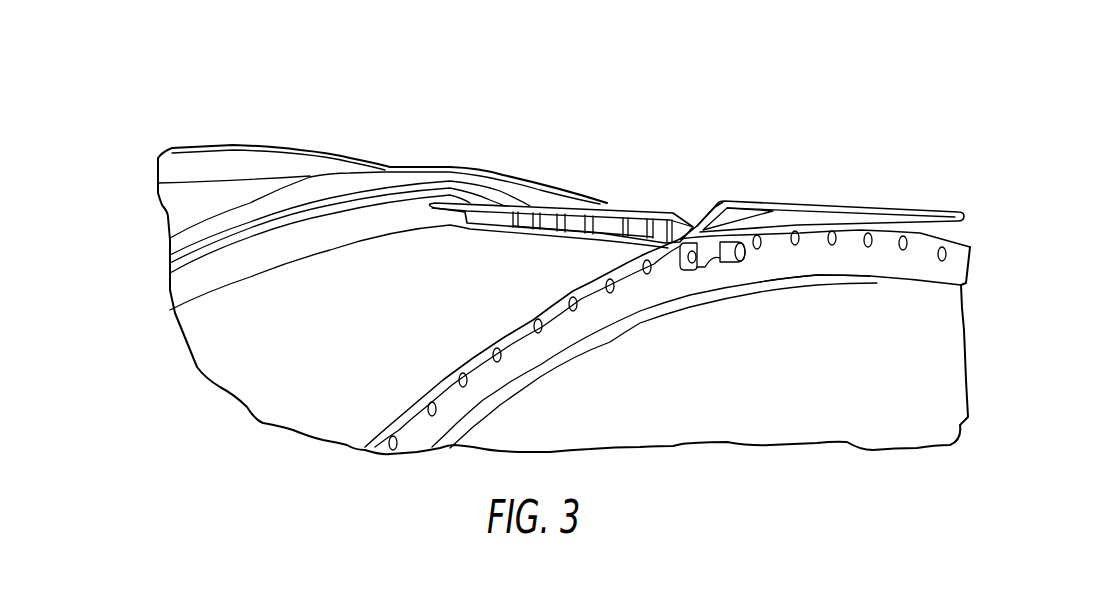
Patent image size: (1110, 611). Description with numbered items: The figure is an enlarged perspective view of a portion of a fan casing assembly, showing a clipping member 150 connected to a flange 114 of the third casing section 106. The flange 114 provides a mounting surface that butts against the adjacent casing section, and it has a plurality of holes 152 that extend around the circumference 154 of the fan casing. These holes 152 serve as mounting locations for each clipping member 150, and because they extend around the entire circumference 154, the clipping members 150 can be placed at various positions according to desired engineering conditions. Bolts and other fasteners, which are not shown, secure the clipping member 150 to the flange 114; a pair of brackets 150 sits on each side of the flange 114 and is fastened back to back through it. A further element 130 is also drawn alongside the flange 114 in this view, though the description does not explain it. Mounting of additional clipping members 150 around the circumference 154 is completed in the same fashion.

The third casing section 106 is at (768, 437).
The flange 114 is at (918, 257).
The first rail 130 is at (642, 207).
The clipping member 150 is at (824, 204).
The holes 152 is at (649, 274).
The circumference 154 is at (903, 313).